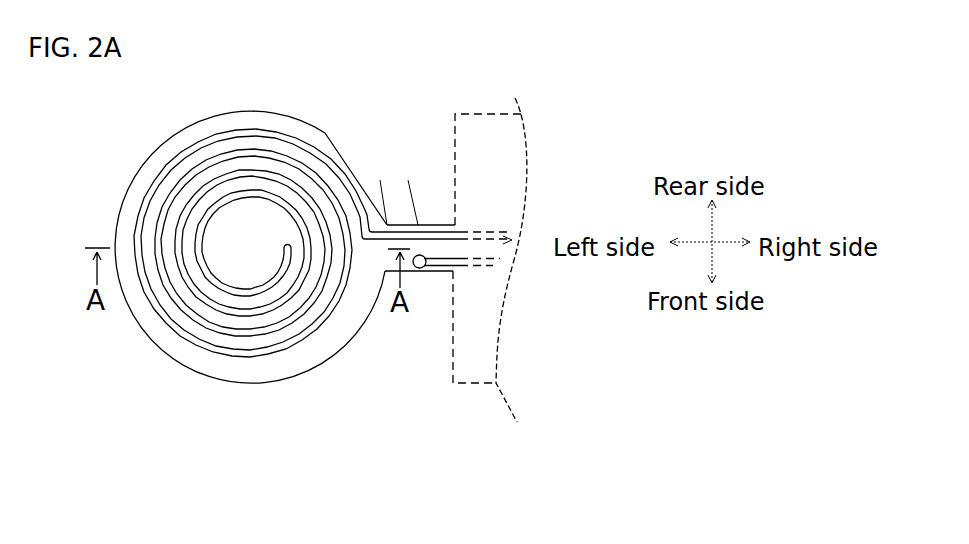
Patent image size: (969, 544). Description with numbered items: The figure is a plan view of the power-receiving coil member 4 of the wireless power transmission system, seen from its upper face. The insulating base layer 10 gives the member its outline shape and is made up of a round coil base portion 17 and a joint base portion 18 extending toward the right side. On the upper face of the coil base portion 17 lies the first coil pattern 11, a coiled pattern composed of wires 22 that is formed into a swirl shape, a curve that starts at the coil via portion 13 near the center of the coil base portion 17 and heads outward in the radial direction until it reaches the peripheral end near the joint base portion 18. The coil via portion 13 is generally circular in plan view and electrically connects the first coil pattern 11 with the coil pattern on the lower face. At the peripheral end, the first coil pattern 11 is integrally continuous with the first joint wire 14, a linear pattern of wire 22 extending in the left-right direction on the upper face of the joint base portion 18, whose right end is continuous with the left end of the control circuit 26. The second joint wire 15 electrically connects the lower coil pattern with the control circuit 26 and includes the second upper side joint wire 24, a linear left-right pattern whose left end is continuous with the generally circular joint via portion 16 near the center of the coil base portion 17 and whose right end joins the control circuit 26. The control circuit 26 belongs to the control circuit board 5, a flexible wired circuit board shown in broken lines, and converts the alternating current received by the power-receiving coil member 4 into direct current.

The power-receiving coil member 4 is at (253, 467).
The control circuit board 5 is at (475, 387).
The insulating base layer 10 is at (285, 298).
The first coil pattern 11 is at (323, 182).
The coil via portion 13 is at (289, 244).
The first joint wire 14 is at (418, 225).
The second joint wire 15 is at (467, 375).
The joint via portion 16 is at (422, 270).
The coil base portion 17 is at (305, 375).
The joint base portion 18 is at (433, 273).
The wire 22 is at (256, 129).
The second upper side joint wire 24 is at (442, 273).
The control circuit 26 is at (500, 258).